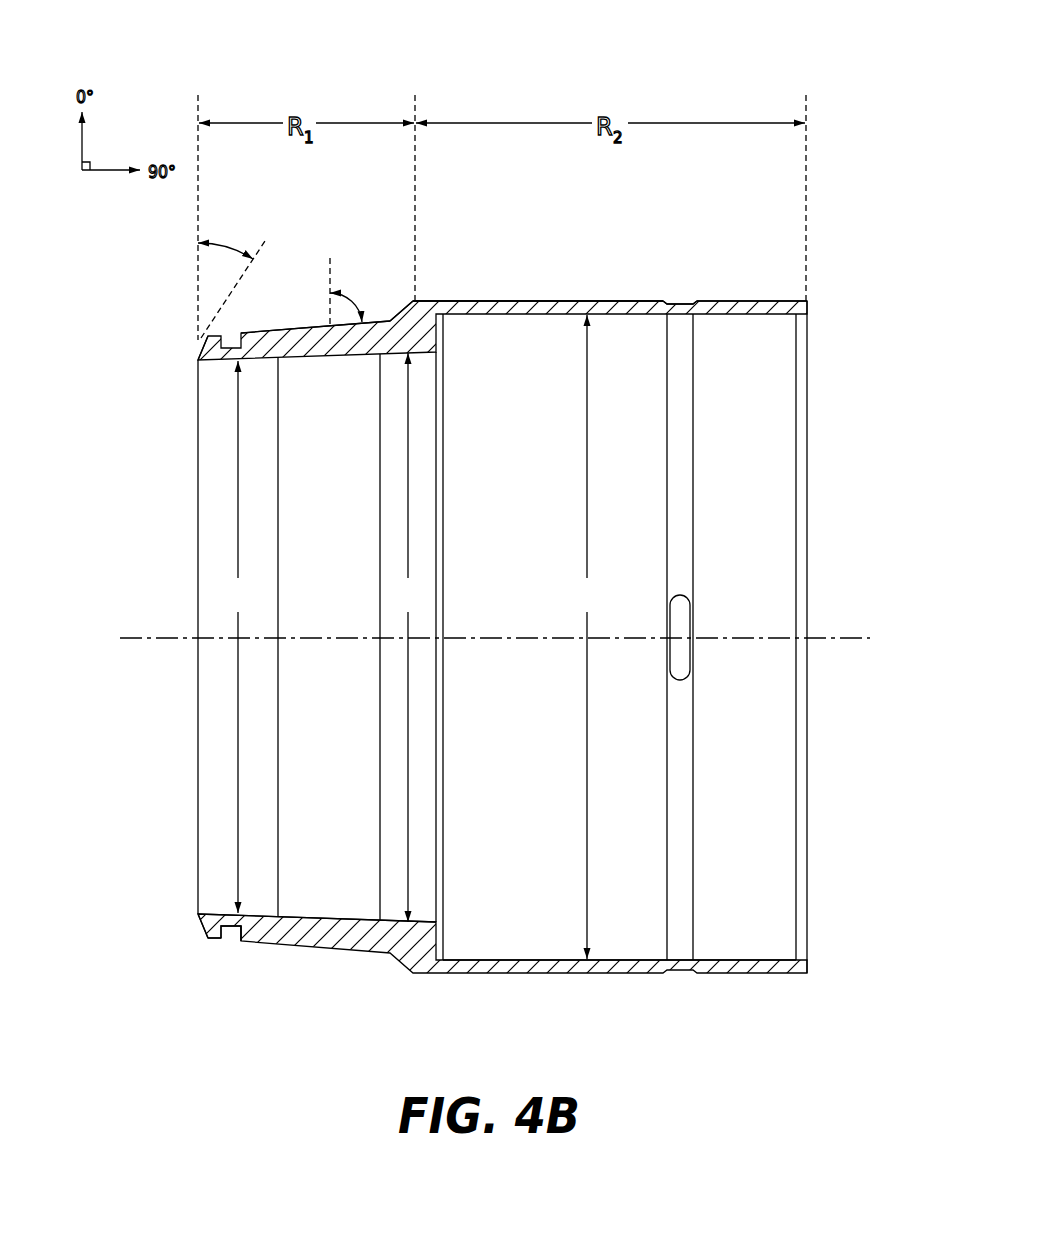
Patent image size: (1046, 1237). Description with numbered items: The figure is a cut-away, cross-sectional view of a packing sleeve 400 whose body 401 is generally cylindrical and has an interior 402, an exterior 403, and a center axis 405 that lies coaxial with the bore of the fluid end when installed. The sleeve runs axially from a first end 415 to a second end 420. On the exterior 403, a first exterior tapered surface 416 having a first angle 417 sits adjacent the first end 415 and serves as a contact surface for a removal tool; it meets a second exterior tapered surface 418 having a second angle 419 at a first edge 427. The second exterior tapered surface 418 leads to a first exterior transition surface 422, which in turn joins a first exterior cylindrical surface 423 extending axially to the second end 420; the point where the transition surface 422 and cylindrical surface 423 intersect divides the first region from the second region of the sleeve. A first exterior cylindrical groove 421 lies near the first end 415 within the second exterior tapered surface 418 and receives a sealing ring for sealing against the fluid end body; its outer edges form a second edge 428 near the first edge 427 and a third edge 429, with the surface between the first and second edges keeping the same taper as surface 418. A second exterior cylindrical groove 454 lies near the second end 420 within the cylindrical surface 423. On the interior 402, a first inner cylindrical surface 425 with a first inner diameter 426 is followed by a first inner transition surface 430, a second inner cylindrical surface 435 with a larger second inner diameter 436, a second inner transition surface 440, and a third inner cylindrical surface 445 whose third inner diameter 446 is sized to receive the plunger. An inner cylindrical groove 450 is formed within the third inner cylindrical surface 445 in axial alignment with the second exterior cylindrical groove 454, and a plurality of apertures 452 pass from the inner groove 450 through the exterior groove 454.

The packing sleeve 400 is at (248, 58).
The body 401 is at (497, 232).
The interior 402 is at (828, 438).
The exterior 403 is at (597, 275).
The center axis 405 is at (855, 637).
The first end 415 is at (197, 388).
The first exterior tapered surface 416 is at (198, 338).
The first angle 417 is at (227, 244).
The second exterior tapered surface 418 is at (292, 328).
The second angle 419 is at (355, 300).
The second end 420 is at (809, 363).
The first exterior cylindrical groove 421 is at (231, 932).
The first exterior transition surface 422 is at (390, 320).
The first exterior cylindrical surface 423 is at (540, 299).
The first inner cylindrical surface 425 is at (215, 906).
The first inner diameter 426 is at (238, 637).
The first edge 427 is at (206, 948).
The second edge 428 is at (219, 946).
The third edge 429 is at (243, 946).
The first inner transition surface 430 is at (323, 908).
The second inner cylindrical surface 435 is at (393, 912).
The second inner diameter 436 is at (408, 637).
The second inner transition surface 440 is at (446, 939).
The third inner cylindrical surface 445 is at (562, 957).
The third inner diameter 446 is at (587, 637).
The inner cylindrical groove 450 is at (680, 957).
The apertures 452 is at (676, 624).
The second exterior cylindrical groove 454 is at (680, 301).